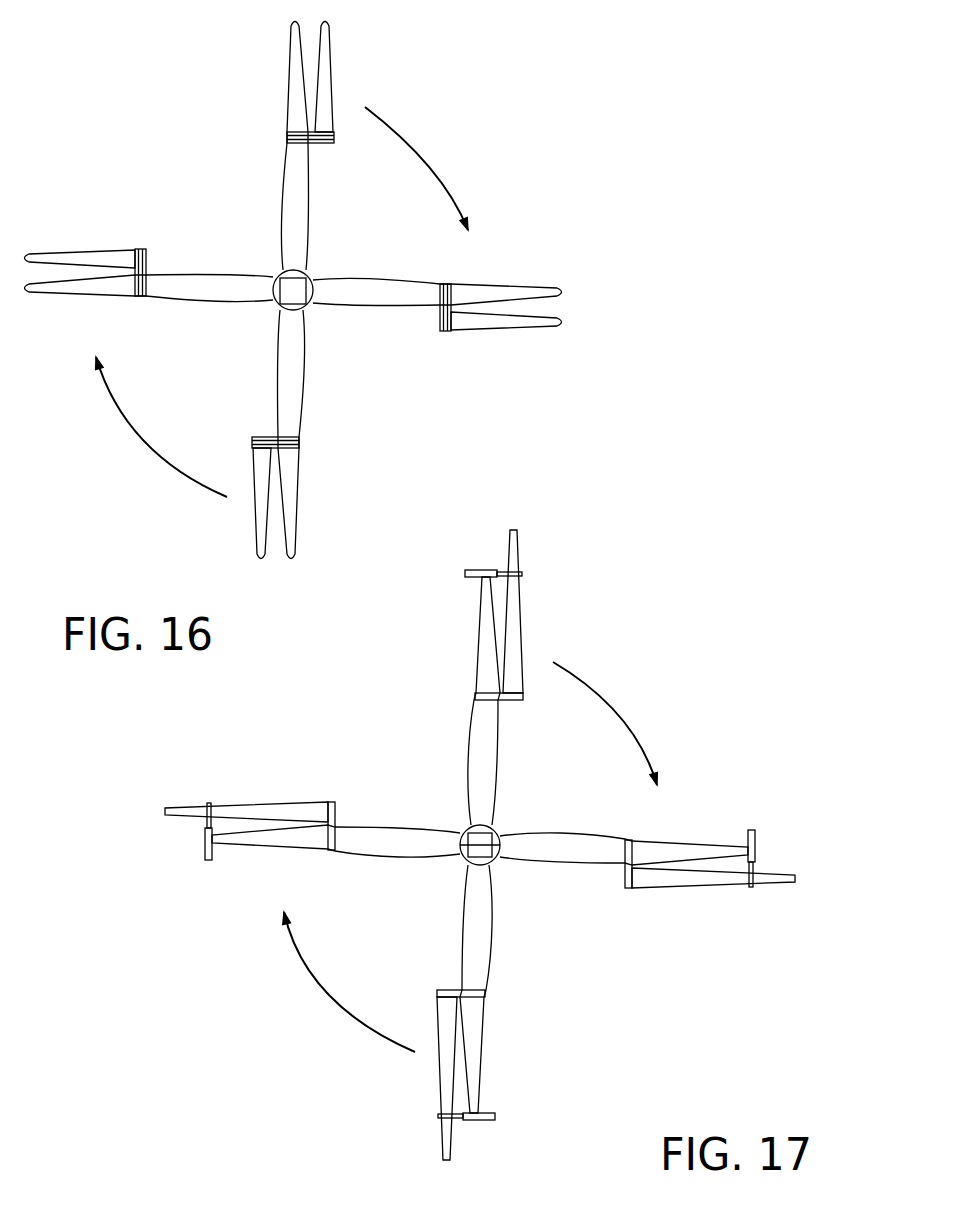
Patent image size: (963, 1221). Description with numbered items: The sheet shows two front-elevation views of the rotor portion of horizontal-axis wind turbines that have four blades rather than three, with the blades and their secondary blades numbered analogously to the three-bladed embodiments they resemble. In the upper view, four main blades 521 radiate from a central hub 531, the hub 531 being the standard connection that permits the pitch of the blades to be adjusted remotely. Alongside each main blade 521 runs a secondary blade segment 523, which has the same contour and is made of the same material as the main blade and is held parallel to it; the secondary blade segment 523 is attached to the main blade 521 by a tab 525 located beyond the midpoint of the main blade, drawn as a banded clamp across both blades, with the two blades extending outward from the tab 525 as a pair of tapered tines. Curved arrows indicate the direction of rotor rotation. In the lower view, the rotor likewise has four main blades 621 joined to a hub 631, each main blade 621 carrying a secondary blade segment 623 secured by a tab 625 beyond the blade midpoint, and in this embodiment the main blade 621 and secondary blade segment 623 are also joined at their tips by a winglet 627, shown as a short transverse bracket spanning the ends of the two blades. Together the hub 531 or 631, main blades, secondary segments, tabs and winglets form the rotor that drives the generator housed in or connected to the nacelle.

In FIG. 16, the main blade 521 is at (292, 92).
In FIG. 16, the secondary blade segment 523 is at (328, 72).
In FIG. 16, the tab 525 is at (287, 136).
In FIG. 16, the hub 531 is at (287, 278).
In FIG. 17, the main blade 621 is at (482, 758).
In FIG. 17, the secondary blade segment 623 is at (522, 605).
In FIG. 17, the tab 625 is at (477, 693).
In FIG. 17, the winglet 627 is at (488, 568).
In FIG. 17, the hub 631 is at (495, 865).